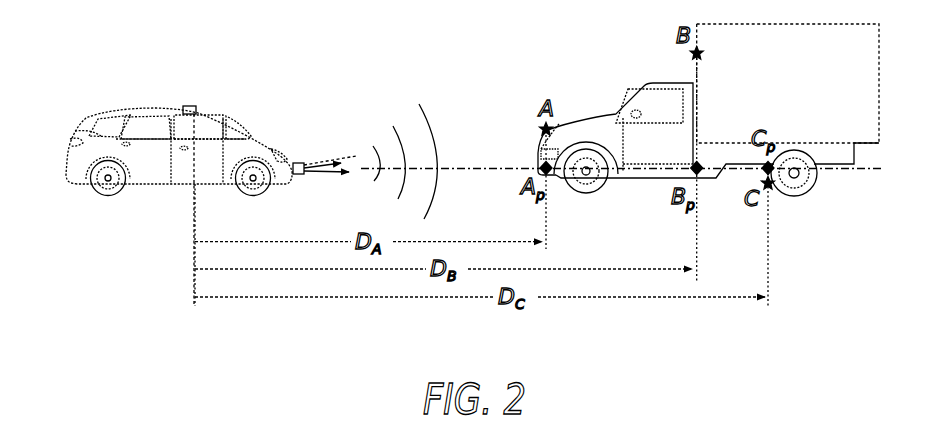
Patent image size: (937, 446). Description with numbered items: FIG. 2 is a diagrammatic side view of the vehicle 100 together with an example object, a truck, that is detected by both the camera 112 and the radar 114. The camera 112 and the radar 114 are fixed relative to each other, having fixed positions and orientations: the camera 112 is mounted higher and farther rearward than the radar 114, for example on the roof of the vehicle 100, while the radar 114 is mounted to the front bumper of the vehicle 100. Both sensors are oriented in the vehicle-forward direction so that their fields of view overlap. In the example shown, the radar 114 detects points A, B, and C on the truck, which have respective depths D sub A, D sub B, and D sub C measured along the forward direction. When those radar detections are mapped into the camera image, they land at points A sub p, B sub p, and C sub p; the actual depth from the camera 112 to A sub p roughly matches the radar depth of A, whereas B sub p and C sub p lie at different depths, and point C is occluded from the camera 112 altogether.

The vehicle 100 is at (71, 126).
The camera 112 is at (190, 103).
The radar 114 is at (297, 160).